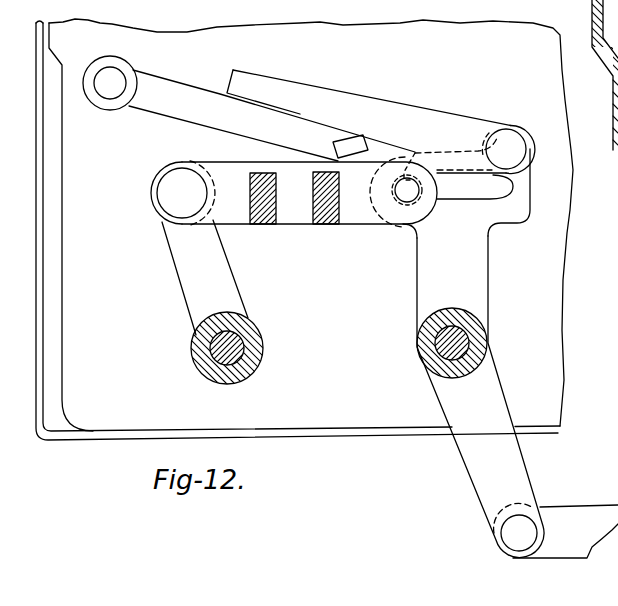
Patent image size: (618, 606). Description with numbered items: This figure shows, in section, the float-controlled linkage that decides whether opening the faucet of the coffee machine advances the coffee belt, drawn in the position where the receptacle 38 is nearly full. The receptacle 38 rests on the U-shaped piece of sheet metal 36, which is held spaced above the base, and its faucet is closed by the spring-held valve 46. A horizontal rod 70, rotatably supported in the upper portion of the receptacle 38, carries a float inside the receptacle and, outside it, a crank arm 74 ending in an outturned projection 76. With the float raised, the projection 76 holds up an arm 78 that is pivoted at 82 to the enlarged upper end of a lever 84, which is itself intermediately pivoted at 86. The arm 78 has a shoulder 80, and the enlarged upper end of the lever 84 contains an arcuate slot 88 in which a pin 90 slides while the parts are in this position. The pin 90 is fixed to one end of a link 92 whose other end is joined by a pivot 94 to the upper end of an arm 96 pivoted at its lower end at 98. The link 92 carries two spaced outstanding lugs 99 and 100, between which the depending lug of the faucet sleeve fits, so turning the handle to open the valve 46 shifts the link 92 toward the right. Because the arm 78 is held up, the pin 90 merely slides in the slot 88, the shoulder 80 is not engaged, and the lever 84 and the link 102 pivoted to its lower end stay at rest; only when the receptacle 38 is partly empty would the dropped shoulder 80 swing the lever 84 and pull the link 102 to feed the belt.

The piece of sheet metal 36 is at (343, 433).
The receptacle 38 is at (98, 413).
The valve 46 is at (594, 3).
The horizontal rod 70 is at (112, 93).
The crank arm 74 is at (193, 112).
The outturned projection 76 is at (350, 147).
The arm 78 is at (413, 118).
The shoulder 80 is at (417, 153).
The pivot 82 is at (521, 128).
The lever 84 is at (433, 268).
The pivot 86 is at (445, 352).
The arcuate slot 88 is at (497, 177).
The pin 90 is at (402, 182).
The link 92 is at (357, 213).
The pivot 94 is at (170, 202).
The arm 96 is at (236, 297).
The pivot 98 is at (240, 338).
The lug 99 is at (267, 220).
The lug 100 is at (331, 207).
The link 102 is at (557, 514).